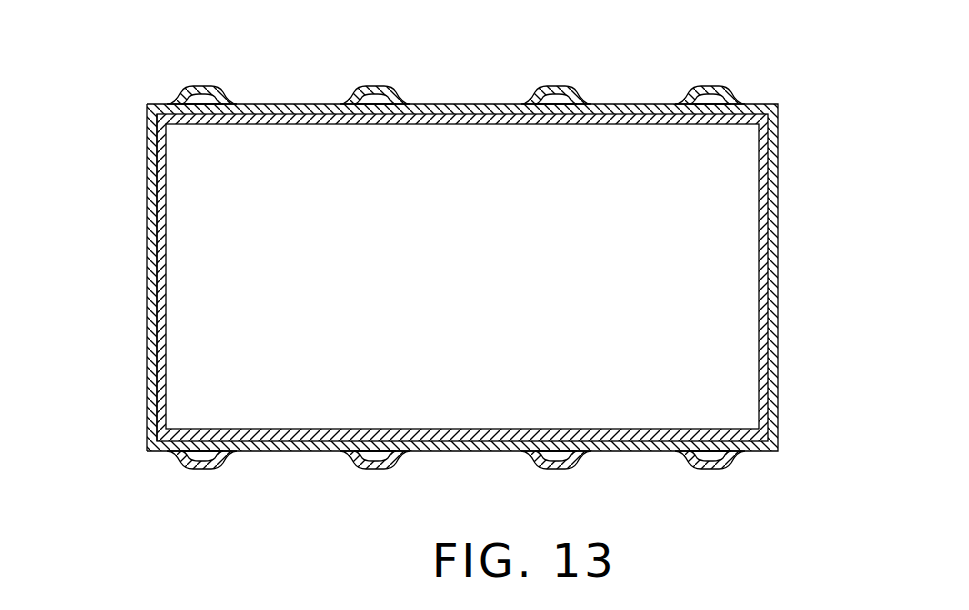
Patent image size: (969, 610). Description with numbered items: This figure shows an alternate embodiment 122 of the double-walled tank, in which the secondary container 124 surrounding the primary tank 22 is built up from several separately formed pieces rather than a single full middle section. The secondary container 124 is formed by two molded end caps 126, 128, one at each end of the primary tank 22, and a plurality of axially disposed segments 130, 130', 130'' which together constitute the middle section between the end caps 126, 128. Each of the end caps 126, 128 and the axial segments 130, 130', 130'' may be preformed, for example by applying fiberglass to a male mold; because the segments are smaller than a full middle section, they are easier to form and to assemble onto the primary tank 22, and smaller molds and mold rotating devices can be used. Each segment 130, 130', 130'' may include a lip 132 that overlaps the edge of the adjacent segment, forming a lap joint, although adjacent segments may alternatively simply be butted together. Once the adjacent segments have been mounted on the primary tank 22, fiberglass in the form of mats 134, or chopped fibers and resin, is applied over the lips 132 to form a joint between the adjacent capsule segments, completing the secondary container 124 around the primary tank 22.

The primary tank 22 is at (345, 130).
The alternate embodiment 122 is at (796, 170).
The secondary container 124 is at (783, 344).
The end cap 126 is at (150, 170).
The end cap 128 is at (778, 230).
The axial segment 130 is at (278, 75).
The axial segment 130' is at (500, 66).
The axial segment 130'' is at (684, 66).
The lip 132 is at (200, 86).
The fiberglass mat 134 is at (213, 83).